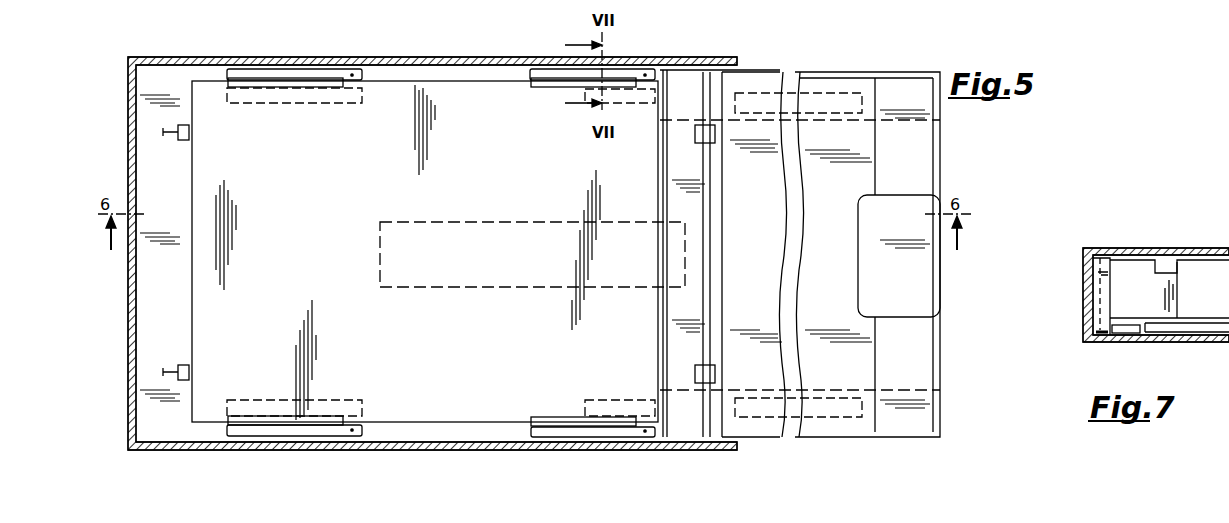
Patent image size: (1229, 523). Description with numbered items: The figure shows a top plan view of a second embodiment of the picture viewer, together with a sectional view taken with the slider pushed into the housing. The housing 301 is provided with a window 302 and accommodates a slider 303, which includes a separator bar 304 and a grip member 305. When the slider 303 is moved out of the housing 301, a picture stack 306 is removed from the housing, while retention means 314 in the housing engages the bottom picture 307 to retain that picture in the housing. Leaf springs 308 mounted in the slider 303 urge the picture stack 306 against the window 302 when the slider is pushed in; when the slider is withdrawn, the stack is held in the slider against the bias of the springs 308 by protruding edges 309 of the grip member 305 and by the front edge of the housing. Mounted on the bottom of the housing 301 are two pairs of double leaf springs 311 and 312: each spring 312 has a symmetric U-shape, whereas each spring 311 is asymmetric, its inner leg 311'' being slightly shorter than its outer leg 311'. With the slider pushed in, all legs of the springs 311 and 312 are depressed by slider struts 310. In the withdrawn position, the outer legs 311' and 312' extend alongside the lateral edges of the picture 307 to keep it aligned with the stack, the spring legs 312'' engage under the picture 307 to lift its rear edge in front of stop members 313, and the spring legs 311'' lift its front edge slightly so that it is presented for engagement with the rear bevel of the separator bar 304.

In FIG. 5, the housing 301 is at (458, 56).
In FIG. 7, the housing 301 is at (1095, 246).
In FIG. 7, the window 302 is at (1155, 259).
In FIG. 5, the slider 303 is at (866, 68).
In FIG. 5, the separator bar 304 is at (700, 208).
In FIG. 7, the separator bar 304 is at (1206, 268).
In FIG. 5, the grip member 305 is at (930, 294).
In FIG. 5, the picture stack 306 is at (850, 380).
In FIG. 5, the bottom picture 307 is at (445, 400).
In FIG. 5, the leaf springs 308 is at (806, 95).
In FIG. 5, the protruding edges 309 is at (856, 236).
In FIG. 5, the slider struts 310 is at (845, 122).
In FIG. 7, the slider struts 310 is at (1127, 320).
In FIG. 5, the double leaf spring 311 is at (613, 252).
In FIG. 7, the double leaf spring 311 is at (1081, 296).
In FIG. 5, the outer leg 311' is at (576, 252).
In FIG. 7, the outer leg 311' is at (1084, 355).
In FIG. 5, the inner leg 311'' is at (616, 252).
In FIG. 7, the inner leg 311'' is at (1149, 352).
In FIG. 5, the double leaf spring 312 is at (322, 252).
In FIG. 5, the outer leg 312' is at (287, 250).
In FIG. 5, the spring leg 312'' is at (287, 252).
In FIG. 5, the stop members 313 is at (172, 136).
In FIG. 5, the retention means 314 is at (372, 252).